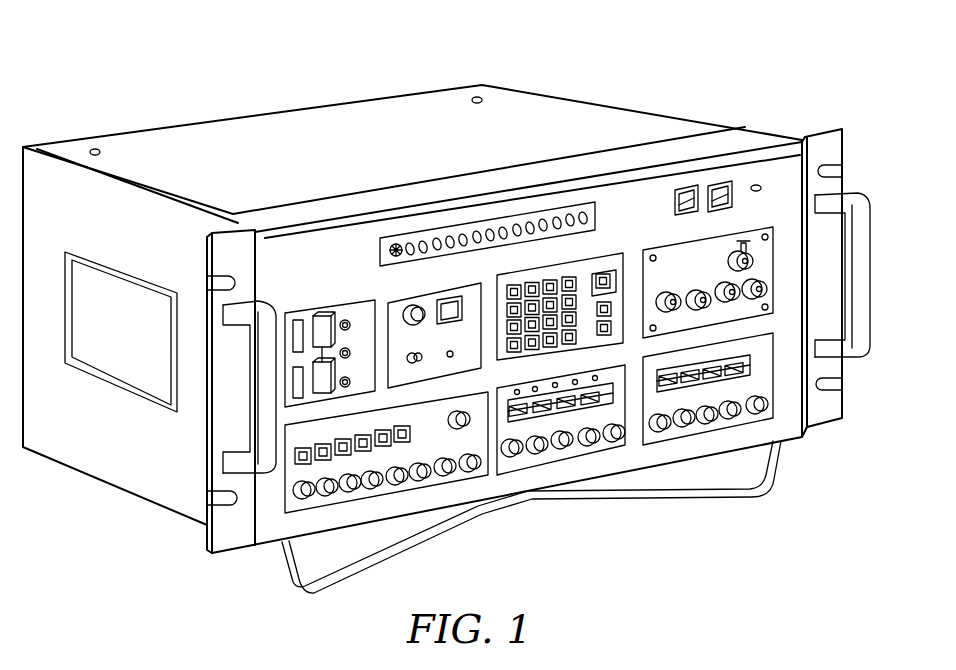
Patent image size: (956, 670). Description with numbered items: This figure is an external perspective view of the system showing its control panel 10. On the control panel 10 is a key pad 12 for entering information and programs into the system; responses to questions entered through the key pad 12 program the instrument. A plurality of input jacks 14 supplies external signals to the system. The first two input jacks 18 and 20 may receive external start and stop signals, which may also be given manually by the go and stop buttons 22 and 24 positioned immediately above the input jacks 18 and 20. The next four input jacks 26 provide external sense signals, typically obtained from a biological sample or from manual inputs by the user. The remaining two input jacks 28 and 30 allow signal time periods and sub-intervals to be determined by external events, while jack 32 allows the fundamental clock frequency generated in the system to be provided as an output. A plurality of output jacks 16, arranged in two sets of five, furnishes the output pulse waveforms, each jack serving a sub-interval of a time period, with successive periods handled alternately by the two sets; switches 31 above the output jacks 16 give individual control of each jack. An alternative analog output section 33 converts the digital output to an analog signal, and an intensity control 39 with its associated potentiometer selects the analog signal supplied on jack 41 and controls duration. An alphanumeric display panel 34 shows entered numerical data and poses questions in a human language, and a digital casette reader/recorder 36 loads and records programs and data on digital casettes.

The control panel 10 is at (335, 268).
The key pad 12 is at (528, 290).
The input jacks 14 is at (540, 482).
The output jacks 16 is at (523, 477).
The input jack 18 is at (293, 484).
The input jack 20 is at (290, 500).
The go button 22 is at (295, 442).
The stop button 24 is at (320, 433).
The input jacks 26 is at (416, 465).
The input jack 28 is at (452, 465).
The input jack 30 is at (483, 457).
The switches 31 is at (470, 418).
The jack 32 is at (468, 414).
The analog output section 33 is at (722, 232).
The alphanumeric display panel 34 is at (520, 216).
The digital casette reader/recorder 36 is at (312, 322).
The intensity control 39 is at (670, 292).
The jack 41 is at (775, 311).